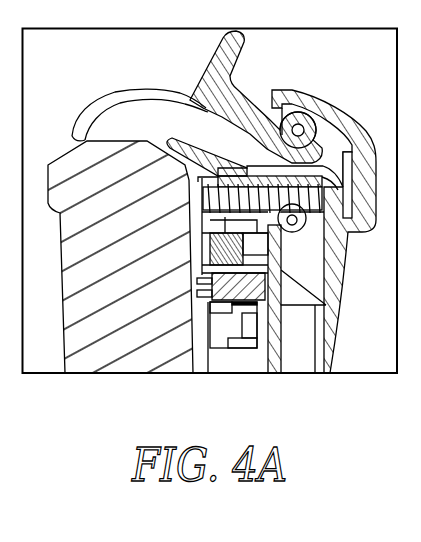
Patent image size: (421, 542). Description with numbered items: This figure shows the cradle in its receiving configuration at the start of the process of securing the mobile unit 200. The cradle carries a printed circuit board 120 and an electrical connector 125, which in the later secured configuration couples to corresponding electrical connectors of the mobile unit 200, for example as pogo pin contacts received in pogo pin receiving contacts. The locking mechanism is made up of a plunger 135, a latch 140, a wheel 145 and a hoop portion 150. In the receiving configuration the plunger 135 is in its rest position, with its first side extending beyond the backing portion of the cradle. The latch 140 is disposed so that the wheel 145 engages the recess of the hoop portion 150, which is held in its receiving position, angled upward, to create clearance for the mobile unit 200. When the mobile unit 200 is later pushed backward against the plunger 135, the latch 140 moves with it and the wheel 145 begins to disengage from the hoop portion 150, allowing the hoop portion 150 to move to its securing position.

The printed circuit board 120 is at (280, 273).
The electrical connector 125 is at (237, 287).
The plunger 135 is at (195, 188).
The latch 140 is at (337, 117).
The wheel 145 is at (296, 114).
The hoop portion 150 is at (229, 48).
The mobile unit 200 is at (131, 361).